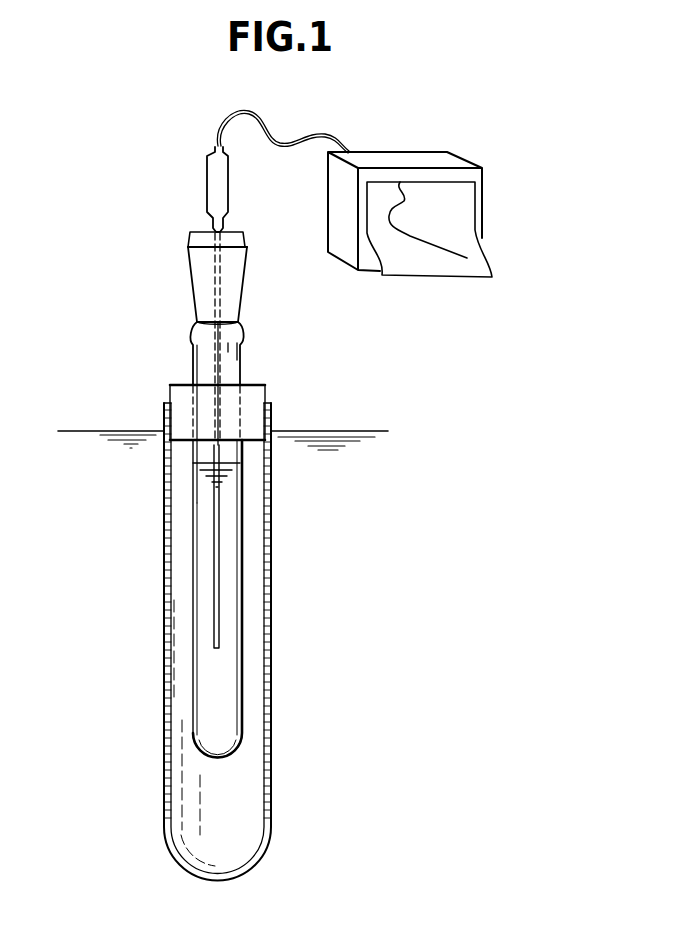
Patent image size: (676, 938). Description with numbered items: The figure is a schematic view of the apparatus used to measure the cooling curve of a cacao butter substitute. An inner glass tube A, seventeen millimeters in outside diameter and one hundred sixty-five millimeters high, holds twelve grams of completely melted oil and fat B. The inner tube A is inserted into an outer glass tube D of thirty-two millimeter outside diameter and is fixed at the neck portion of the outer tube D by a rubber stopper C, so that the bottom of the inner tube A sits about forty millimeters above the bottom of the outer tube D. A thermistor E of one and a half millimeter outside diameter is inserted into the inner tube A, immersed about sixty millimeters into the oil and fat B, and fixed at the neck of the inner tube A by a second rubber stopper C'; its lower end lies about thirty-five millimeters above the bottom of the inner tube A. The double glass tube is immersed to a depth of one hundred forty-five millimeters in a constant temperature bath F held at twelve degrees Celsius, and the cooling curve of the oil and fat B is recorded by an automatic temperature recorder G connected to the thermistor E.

The inner glass tube A is at (190, 340).
The oil and fat B is at (230, 556).
The rubber stopper C is at (231, 391).
The rubber stopper C' is at (197, 197).
The outer glass tube D is at (163, 690).
The thermistor E is at (219, 610).
The constant temperature bath F is at (93, 455).
The automatic temperature recorder G is at (482, 197).